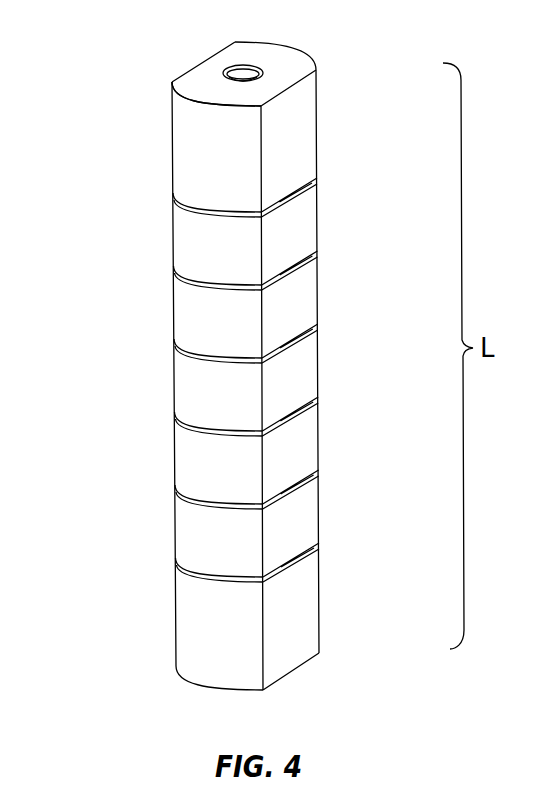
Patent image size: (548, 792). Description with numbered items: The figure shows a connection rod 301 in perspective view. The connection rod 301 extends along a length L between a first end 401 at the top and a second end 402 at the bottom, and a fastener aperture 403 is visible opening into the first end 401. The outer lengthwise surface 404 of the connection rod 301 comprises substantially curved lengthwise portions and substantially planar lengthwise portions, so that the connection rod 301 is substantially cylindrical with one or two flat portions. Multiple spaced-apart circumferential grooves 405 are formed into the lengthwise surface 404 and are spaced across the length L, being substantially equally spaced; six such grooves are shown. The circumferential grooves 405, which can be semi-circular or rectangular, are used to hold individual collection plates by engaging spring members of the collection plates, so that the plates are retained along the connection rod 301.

The connection rod 301 is at (198, 360).
The first end 401 is at (293, 63).
The second end 402 is at (296, 671).
The fastener aperture 403 is at (236, 66).
The lengthwise surface 404 is at (190, 161).
The circumferential grooves 405 is at (176, 276).